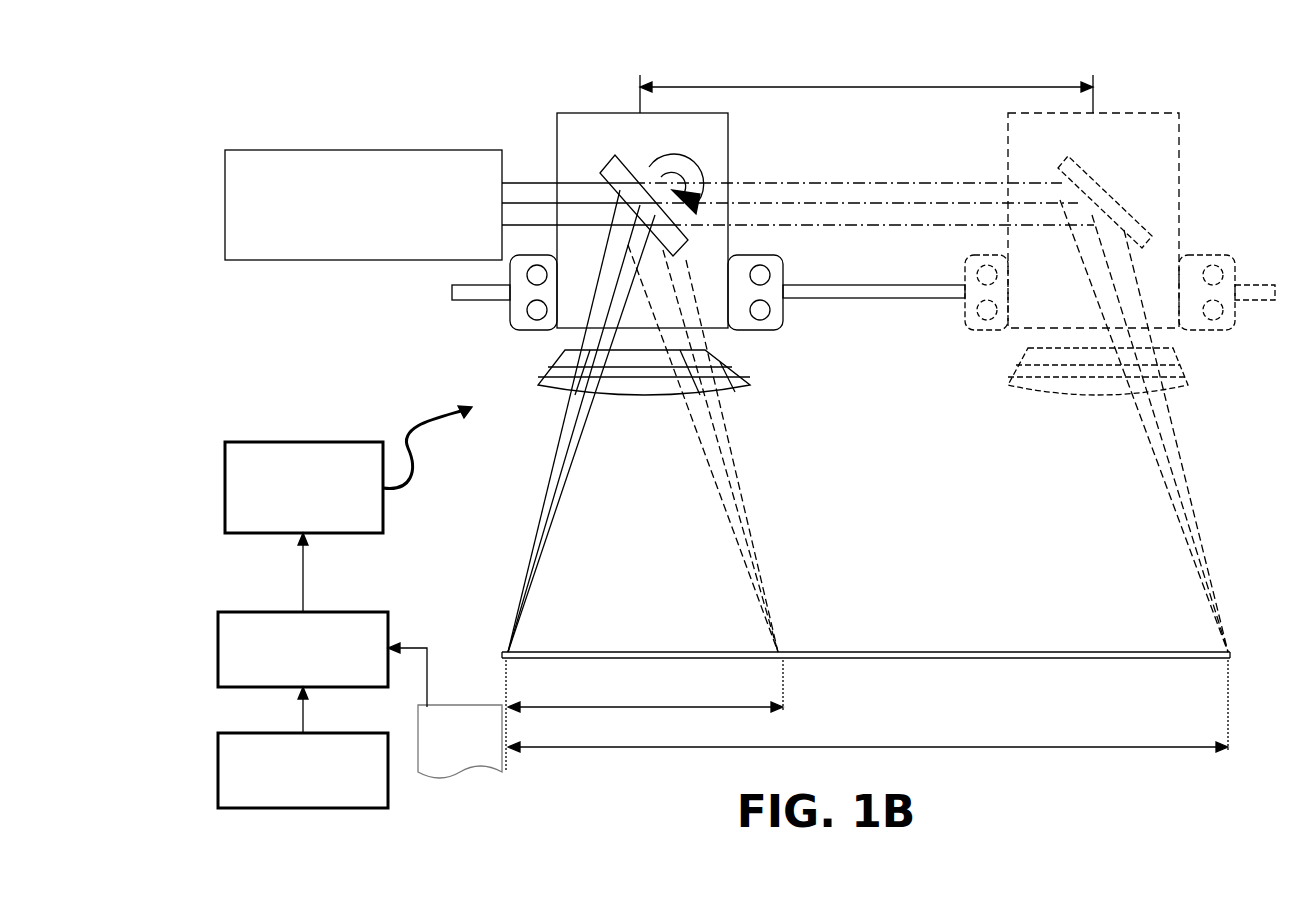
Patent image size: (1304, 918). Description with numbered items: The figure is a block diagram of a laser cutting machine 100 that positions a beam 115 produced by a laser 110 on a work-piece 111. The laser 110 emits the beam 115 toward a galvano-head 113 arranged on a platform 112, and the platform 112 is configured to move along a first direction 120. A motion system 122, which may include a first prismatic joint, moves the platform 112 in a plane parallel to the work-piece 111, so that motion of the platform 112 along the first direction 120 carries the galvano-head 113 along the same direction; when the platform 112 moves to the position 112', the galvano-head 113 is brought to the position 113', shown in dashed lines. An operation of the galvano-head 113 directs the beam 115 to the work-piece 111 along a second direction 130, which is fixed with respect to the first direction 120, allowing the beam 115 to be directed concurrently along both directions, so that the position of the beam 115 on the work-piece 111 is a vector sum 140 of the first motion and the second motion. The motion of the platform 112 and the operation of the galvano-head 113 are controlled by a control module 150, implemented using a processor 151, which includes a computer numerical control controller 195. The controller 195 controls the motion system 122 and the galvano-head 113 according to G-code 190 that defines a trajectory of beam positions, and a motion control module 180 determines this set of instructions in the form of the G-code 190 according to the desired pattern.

The laser cutting machine 100 is at (793, 886).
The laser 110 is at (345, 150).
The work-piece 111 is at (945, 655).
The platform 112 is at (588, 312).
The platform position 112' is at (1110, 337).
The galvano-head 113 is at (644, 217).
The galvano-head position 113' is at (1098, 217).
The beam 115 is at (728, 477).
The first direction 120 is at (906, 88).
The motion system 122 is at (885, 298).
The second direction 130 is at (645, 707).
The vector sum 140 is at (904, 748).
The control module 150 is at (348, 449).
The processor 151 is at (304, 487).
The motion control module 180 is at (218, 768).
The G-code 190 is at (445, 732).
The computer numerical control (CNC) controller 195 is at (218, 626).